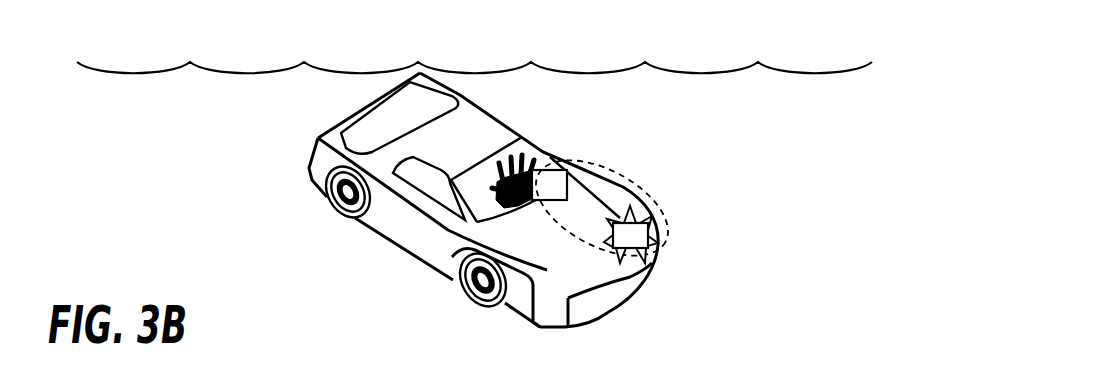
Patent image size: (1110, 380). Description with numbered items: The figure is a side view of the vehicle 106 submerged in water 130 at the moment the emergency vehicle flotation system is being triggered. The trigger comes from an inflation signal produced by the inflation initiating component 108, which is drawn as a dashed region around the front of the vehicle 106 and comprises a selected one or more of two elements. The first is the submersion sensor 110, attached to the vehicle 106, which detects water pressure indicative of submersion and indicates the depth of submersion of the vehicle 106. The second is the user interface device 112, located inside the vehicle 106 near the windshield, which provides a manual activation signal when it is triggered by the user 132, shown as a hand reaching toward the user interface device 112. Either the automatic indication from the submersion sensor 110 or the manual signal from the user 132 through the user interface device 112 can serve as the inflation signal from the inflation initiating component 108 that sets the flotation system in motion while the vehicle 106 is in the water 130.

The vehicle 106 is at (495, 110).
The inflation initiating component 108 is at (668, 238).
The submersion sensor 110 is at (643, 208).
The user interface device 112 is at (567, 184).
The water 130 is at (743, 106).
The user 132 is at (493, 188).